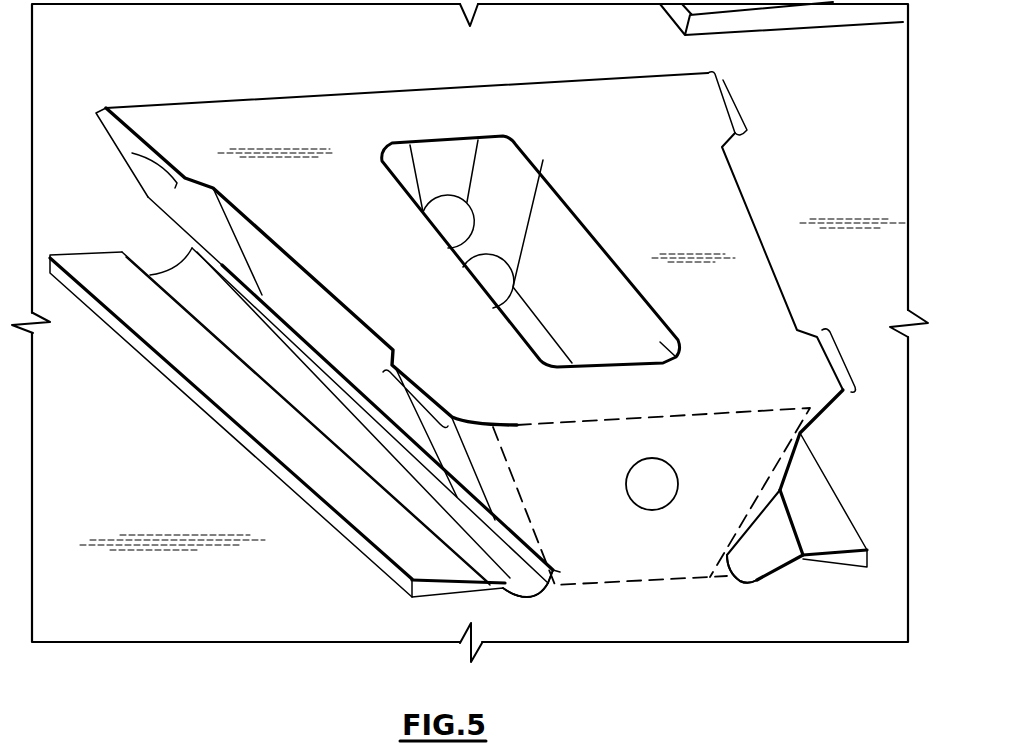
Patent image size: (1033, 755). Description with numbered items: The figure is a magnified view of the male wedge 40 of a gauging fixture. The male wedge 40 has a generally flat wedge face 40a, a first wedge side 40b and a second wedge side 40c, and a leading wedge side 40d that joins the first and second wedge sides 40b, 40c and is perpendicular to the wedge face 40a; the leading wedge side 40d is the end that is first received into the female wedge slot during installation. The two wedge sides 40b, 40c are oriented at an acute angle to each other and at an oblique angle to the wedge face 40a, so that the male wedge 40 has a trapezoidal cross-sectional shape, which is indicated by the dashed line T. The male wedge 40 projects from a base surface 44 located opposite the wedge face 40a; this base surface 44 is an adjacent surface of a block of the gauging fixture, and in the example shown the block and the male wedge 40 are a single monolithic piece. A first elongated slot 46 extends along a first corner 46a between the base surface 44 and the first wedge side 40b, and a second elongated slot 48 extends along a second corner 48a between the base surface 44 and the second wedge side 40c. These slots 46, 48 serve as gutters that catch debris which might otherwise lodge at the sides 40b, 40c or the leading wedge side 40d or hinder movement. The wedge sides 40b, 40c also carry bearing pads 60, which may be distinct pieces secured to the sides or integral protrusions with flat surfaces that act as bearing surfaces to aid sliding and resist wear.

The male wedge 40 is at (476, 350).
The wedge face 40a is at (712, 197).
The first wedge side 40b is at (347, 340).
The second wedge side 40c is at (803, 440).
The leading wedge side 40d is at (703, 493).
The base surface 44 is at (347, 607).
The first elongated slot 46 is at (493, 598).
The first corner 46a is at (494, 539).
The second elongated slot 48 is at (732, 584).
The second corner 48a is at (752, 550).
The bearing pads 60 is at (128, 157).
The dashed line T is at (780, 487).